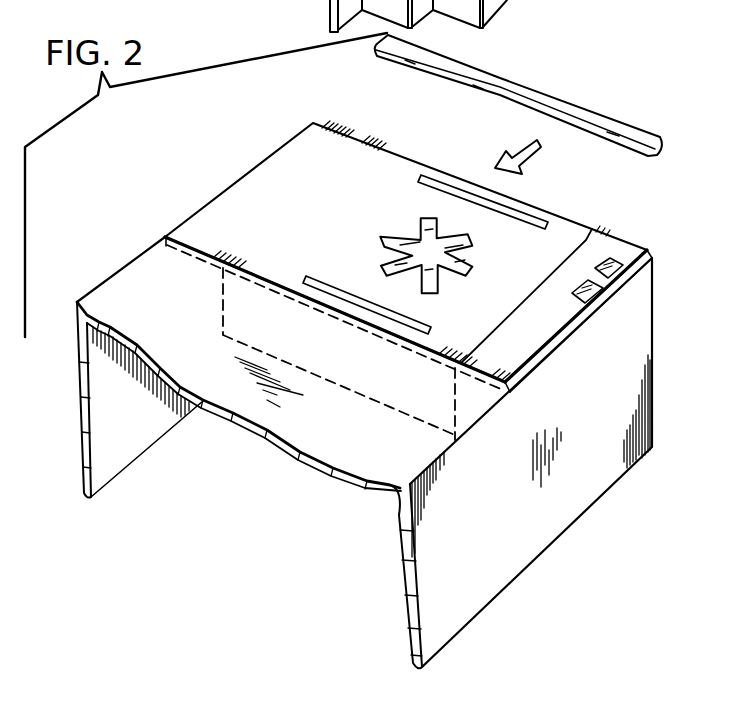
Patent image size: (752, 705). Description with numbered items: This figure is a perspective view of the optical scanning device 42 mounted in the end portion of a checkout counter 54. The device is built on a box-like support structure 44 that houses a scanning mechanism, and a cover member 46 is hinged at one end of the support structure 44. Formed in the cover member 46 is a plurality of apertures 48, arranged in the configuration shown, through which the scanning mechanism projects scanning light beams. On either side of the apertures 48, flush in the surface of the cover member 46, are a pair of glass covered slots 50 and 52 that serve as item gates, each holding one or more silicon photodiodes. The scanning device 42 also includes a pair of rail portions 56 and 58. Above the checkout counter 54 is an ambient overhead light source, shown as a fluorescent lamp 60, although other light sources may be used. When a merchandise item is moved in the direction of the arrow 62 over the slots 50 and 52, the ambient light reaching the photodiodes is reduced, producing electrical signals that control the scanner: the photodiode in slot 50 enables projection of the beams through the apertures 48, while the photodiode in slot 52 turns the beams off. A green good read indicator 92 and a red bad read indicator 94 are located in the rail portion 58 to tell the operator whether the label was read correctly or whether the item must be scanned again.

The optical scanning device 42 is at (426, 244).
The box-like support structure 44 is at (387, 452).
The cover member 46 is at (572, 230).
The apertures 48 is at (397, 233).
The glass covered slot 50 is at (518, 210).
The glass covered slot 52 is at (333, 286).
The checkout counter 54 is at (640, 370).
The rail portion 56 is at (237, 190).
The rail portion 58 is at (617, 243).
The fluorescent lamp 60 is at (475, 90).
The arrow 62 is at (518, 138).
The good read indicator 92 is at (603, 292).
The bad read indicator 94 is at (625, 265).